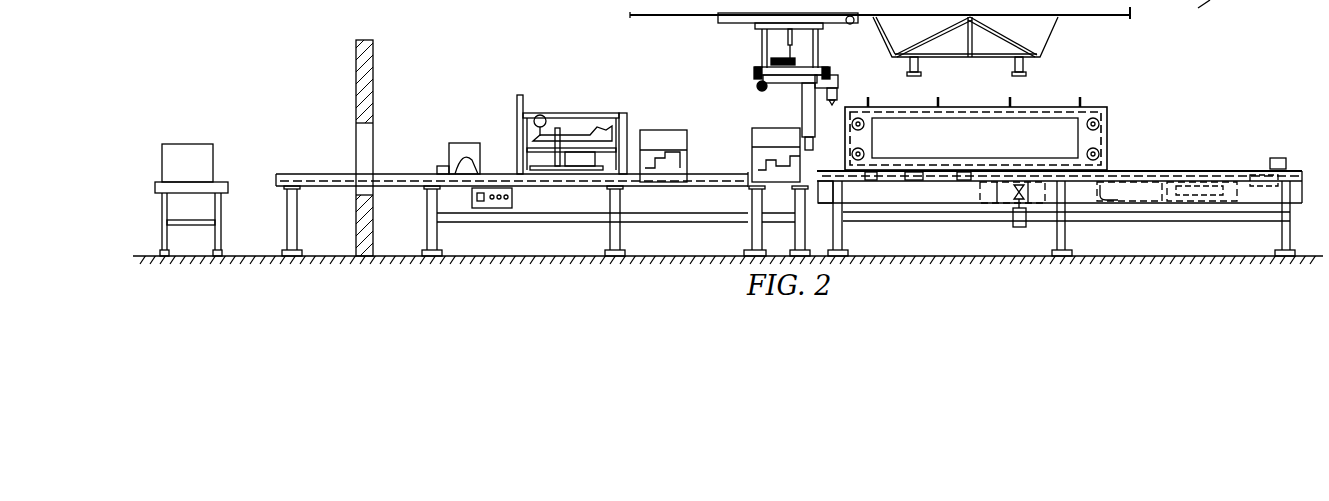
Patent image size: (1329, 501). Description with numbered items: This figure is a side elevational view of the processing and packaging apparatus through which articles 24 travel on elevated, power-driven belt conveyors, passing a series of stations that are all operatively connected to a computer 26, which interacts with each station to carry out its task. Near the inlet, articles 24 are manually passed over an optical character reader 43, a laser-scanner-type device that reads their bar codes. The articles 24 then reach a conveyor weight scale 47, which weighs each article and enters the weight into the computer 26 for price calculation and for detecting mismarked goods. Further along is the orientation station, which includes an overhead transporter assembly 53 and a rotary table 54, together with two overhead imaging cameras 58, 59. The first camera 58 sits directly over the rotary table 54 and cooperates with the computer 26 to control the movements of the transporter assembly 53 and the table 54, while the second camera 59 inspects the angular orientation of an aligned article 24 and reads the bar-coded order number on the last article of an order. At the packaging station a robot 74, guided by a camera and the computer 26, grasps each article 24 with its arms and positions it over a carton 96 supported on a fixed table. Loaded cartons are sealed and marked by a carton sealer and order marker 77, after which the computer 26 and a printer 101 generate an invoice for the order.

The printer 101 is at (435, 172).
The computer 26 is at (470, 142).
The carton sealer and order marker 77 is at (590, 113).
The carton 96 is at (752, 146).
The robot 74 is at (757, 70).
The overhead imaging camera 59 is at (920, 68).
The overhead imaging camera 58 is at (1026, 68).
The overhead transporter assembly 53 is at (1108, 122).
The rotary table 54 is at (967, 185).
The conveyor weight scale 47 is at (1131, 196).
The optical character reader 43 is at (1197, 197).
The articles 24 is at (1281, 157).